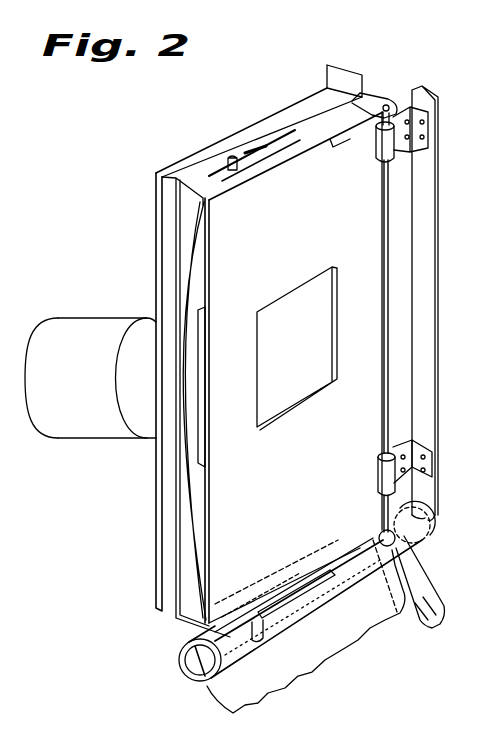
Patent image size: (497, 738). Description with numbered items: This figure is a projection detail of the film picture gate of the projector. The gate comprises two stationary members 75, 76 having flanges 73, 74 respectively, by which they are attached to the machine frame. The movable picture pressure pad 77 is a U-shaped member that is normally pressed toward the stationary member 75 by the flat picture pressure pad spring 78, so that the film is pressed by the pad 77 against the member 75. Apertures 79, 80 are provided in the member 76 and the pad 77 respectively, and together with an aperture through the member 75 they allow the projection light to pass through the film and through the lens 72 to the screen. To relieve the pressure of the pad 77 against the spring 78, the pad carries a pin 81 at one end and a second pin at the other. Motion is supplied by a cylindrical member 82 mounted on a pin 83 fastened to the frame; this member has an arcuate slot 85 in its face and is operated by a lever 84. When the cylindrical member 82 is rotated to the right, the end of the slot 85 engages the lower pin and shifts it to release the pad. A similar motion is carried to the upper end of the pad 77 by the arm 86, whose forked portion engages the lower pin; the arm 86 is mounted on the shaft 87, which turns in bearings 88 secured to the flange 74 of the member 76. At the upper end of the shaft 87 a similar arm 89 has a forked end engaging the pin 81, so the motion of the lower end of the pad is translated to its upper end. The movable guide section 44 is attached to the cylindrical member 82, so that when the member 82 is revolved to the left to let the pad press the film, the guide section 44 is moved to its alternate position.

The movable guide section 44 is at (228, 708).
The lens 72 is at (90, 378).
The flange 73 is at (336, 69).
The flange 74 is at (431, 97).
The stationary member 75 is at (157, 552).
The stationary member 76 is at (294, 376).
The movable picture pressure pad 77 is at (187, 583).
The flat picture pressure pad spring 78 is at (194, 411).
The aperture 79 is at (272, 412).
The aperture 80 is at (203, 420).
The pin 81 is at (232, 156).
The cylindrical member 82 is at (195, 684).
The pin 83 is at (190, 659).
The lever 84 is at (428, 625).
The arcuate slot 85 is at (266, 626).
The arm 86 is at (350, 548).
The shaft 87 is at (385, 418).
The bearings 88 is at (378, 145).
The arm 89 is at (372, 98).